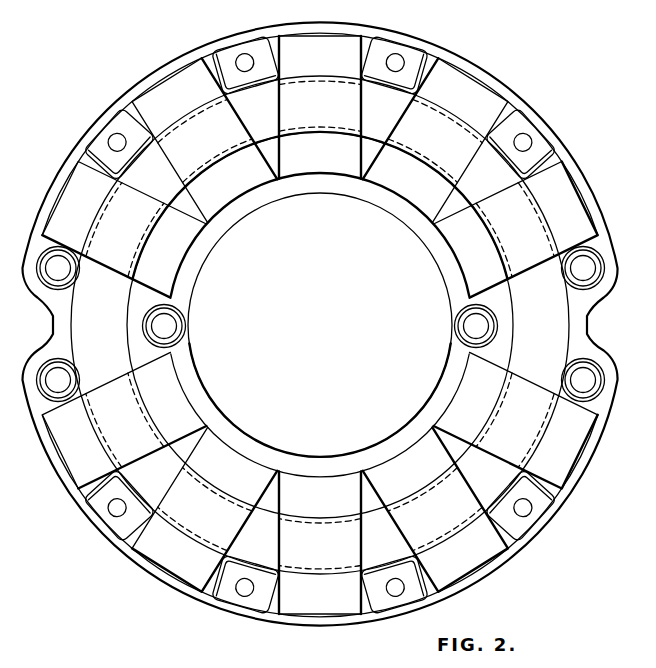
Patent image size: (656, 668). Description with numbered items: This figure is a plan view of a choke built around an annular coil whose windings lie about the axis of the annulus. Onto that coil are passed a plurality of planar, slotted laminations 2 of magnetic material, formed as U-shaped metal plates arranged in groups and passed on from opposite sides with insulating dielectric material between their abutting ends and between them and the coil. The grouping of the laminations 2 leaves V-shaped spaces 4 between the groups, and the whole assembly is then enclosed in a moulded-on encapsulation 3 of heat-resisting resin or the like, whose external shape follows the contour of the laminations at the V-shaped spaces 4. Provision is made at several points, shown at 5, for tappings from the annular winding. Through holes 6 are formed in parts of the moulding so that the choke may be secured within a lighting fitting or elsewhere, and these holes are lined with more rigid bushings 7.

The laminations 2 is at (185, 100).
The encapsulation 3 is at (316, 21).
The V-shaped spaces 4 is at (498, 183).
The tapping provision 5 is at (392, 61).
The through holes 6 is at (162, 326).
The bushings 7 is at (176, 331).